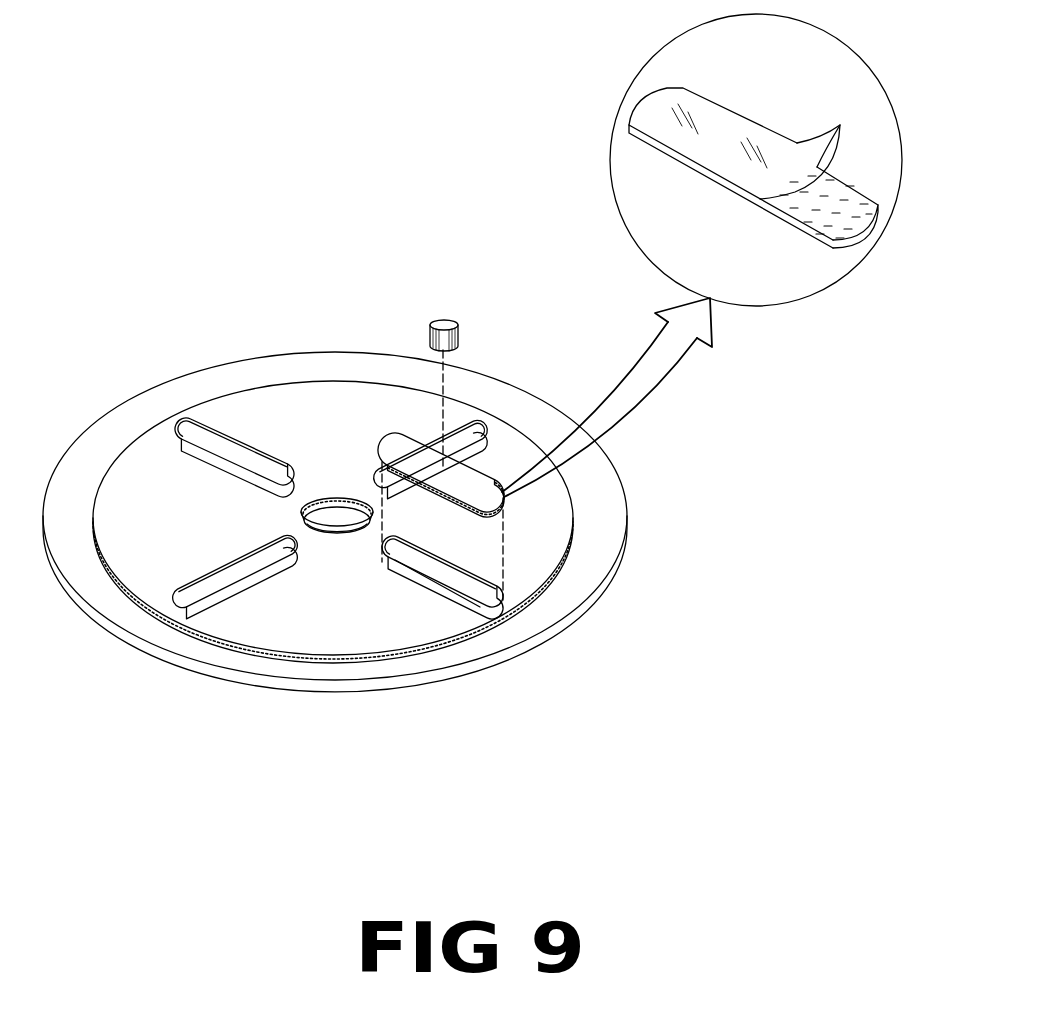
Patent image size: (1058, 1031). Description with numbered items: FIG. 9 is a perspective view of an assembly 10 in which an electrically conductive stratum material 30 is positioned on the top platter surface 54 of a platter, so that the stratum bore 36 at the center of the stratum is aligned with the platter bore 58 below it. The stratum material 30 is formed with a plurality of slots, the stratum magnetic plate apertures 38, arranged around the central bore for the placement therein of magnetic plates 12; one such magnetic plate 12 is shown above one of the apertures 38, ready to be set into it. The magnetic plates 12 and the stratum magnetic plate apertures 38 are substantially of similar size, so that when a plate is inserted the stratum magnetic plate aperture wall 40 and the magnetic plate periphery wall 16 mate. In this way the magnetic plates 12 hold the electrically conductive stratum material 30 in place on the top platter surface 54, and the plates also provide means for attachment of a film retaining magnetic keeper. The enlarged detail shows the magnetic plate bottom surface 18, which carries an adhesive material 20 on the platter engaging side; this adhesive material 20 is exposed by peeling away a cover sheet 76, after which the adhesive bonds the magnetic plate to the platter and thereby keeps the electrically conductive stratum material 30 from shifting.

The disc assembly 10 is at (341, 148).
The magnetic plates 12 is at (478, 483).
The magnetic plate periphery wall 16 is at (432, 497).
The magnetic plate bottom surface 18 is at (648, 122).
The adhesive material 20 is at (803, 212).
The electrically conductive stratum material 30 is at (292, 400).
The stratum bore 36 is at (332, 497).
The stratum magnetic plate apertures 38 is at (470, 438).
The stratum magnetic plate aperture wall 40 is at (427, 582).
The top platter surface 54 is at (105, 428).
The platter bore 58 is at (331, 546).
The cover sheet 76 is at (730, 124).